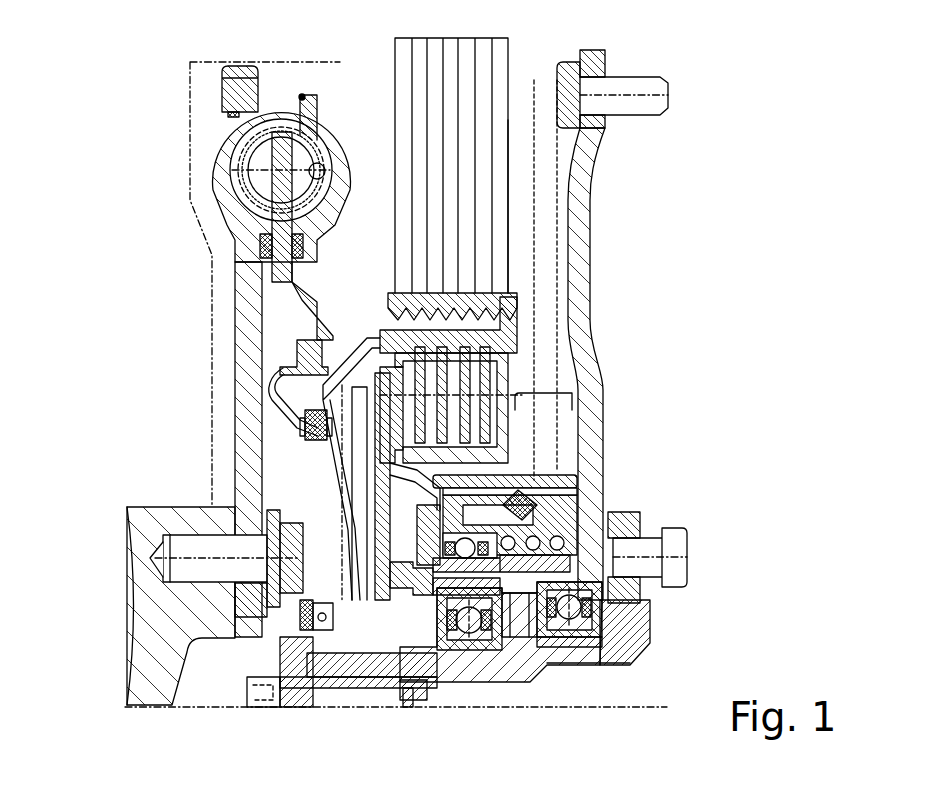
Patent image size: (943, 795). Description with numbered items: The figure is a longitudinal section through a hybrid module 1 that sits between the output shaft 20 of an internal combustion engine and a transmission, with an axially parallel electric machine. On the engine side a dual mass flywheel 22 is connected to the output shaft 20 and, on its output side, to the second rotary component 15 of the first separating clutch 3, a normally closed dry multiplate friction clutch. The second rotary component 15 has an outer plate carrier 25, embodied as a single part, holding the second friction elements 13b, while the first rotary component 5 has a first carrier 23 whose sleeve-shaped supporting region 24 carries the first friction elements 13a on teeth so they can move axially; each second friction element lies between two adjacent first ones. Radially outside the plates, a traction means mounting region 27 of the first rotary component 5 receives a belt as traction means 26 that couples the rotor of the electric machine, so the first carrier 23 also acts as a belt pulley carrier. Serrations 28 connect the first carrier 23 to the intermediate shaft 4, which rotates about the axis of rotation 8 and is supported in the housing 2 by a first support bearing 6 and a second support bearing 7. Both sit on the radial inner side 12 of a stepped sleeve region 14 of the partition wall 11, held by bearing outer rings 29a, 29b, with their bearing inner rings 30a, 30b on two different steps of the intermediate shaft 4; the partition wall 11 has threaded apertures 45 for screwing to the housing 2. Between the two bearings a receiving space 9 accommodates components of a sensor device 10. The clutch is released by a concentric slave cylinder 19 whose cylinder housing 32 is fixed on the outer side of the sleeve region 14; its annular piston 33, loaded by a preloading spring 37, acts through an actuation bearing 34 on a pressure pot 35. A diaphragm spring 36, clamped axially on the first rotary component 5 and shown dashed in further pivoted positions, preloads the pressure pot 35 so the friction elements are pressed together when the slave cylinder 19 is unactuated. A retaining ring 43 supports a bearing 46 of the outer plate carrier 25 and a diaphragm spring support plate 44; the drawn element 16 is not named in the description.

The hybrid module 1 is at (143, 110).
The housing 2 is at (608, 340).
The first separating clutch 3 is at (325, 328).
The intermediate shaft 4 is at (476, 672).
The first rotary component 5 is at (528, 410).
The first support bearing 6 is at (426, 672).
The second support bearing 7 is at (560, 652).
The axis of rotation 8 is at (660, 712).
The receiving space 9 is at (566, 657).
The sensor device 10 is at (540, 652).
The partition wall 11 is at (590, 280).
The radial inner side 12 is at (590, 630).
The first friction elements 13a is at (445, 470).
The second friction elements 13b is at (460, 412).
The sleeve region 14 is at (560, 578).
The second rotary component 15 is at (290, 482).
The support flange 16 is at (380, 678).
The slave cylinder 19 is at (548, 488).
The output shaft 20 is at (157, 637).
The dual mass flywheel 22 is at (197, 88).
The first carrier 23 is at (580, 470).
The supporting region 24 is at (560, 540).
The outer plate carrier 25 is at (275, 383).
The traction means 26 is at (487, 65).
The traction means mounting region 27 is at (455, 297).
The serrations 28 is at (293, 650).
The bearing outer ring 29a is at (640, 590).
The bearing outer ring 29b is at (593, 587).
The bearing inner ring 30a is at (477, 668).
The bearing inner ring 30b is at (598, 660).
The cylinder housing 32 is at (540, 548).
The piston 33 is at (415, 547).
The actuation bearing 34 is at (305, 592).
The pressure pot 35 is at (333, 532).
The diaphragm spring 36 is at (305, 424).
The preloading spring 37 is at (545, 565).
The retaining ring 43 is at (285, 638).
The diaphragm spring support plate 44 is at (350, 628).
The apertures 45 is at (612, 70).
The bearing 46 is at (300, 672).